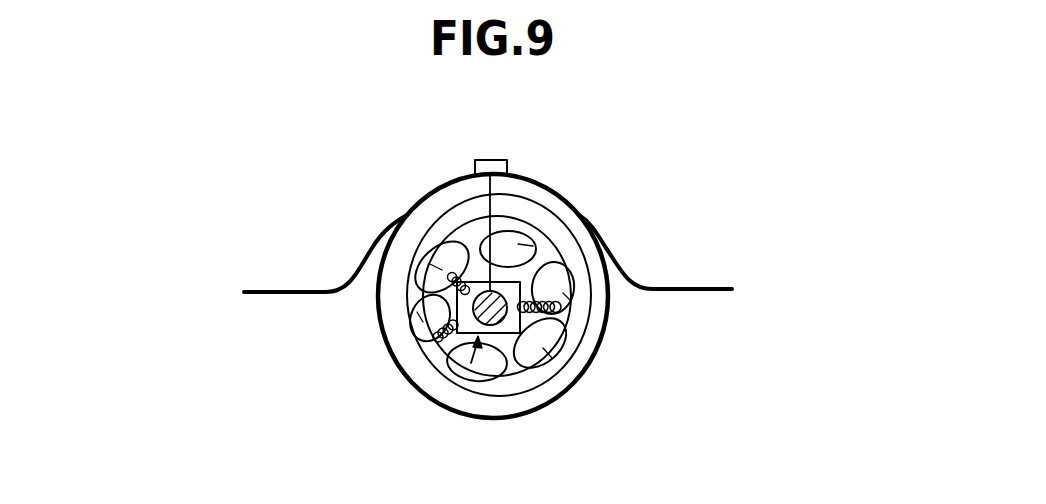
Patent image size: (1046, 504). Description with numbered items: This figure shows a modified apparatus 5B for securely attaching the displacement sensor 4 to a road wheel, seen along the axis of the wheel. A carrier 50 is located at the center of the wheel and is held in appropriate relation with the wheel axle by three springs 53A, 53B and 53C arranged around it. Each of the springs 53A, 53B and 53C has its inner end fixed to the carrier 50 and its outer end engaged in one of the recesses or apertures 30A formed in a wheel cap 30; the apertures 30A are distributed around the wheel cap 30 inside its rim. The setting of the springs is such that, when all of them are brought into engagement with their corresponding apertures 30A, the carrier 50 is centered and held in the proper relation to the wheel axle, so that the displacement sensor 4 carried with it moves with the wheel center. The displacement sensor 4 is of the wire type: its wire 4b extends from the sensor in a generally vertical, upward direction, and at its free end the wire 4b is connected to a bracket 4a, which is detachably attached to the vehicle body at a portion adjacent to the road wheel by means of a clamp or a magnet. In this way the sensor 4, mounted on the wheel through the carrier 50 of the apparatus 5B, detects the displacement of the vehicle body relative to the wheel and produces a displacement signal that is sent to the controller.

The displacement sensor 4 is at (497, 282).
The bracket 4a is at (502, 160).
The wire 4b is at (487, 208).
The wheel cap 30 is at (574, 333).
The apertures 30A is at (522, 245).
The carrier 50 is at (548, 250).
The spring 53A is at (560, 303).
The spring 53B is at (452, 345).
The spring 53C is at (449, 275).
The modified apparatus 5B is at (472, 364).